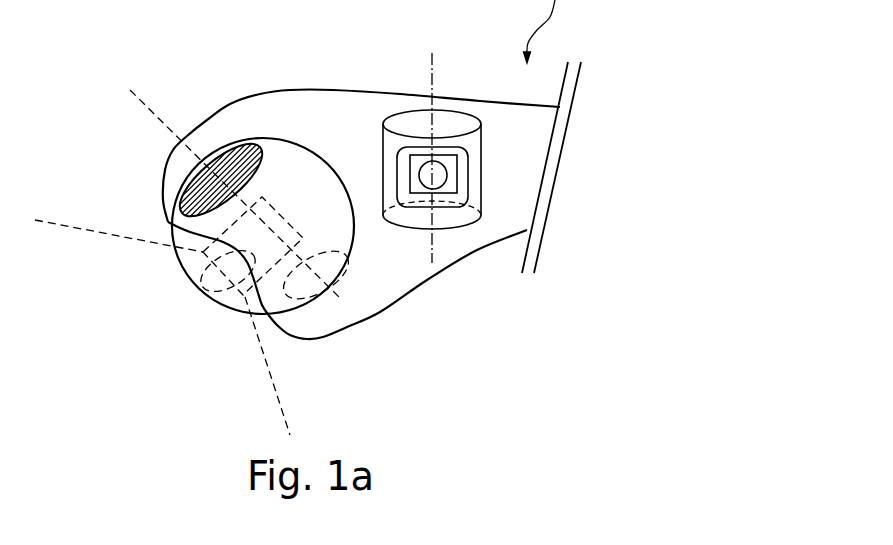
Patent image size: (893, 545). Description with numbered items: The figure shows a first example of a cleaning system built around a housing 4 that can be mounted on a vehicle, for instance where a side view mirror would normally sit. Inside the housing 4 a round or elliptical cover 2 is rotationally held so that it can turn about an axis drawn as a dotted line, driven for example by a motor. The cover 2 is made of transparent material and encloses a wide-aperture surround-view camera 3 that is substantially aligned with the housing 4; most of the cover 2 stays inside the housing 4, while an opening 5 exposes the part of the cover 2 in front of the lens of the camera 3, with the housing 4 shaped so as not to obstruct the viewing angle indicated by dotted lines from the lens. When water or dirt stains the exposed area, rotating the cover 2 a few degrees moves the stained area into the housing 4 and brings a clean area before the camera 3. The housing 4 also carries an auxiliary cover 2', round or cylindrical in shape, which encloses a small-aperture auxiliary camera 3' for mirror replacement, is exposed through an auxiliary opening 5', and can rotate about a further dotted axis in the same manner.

The cover 2 is at (263, 175).
The auxiliary cover 2' is at (434, 150).
The camera 3 is at (260, 272).
The auxiliary camera 3' is at (464, 233).
The housing 4 is at (313, 122).
The opening 5 is at (119, 251).
The auxiliary opening 5' is at (432, 235).